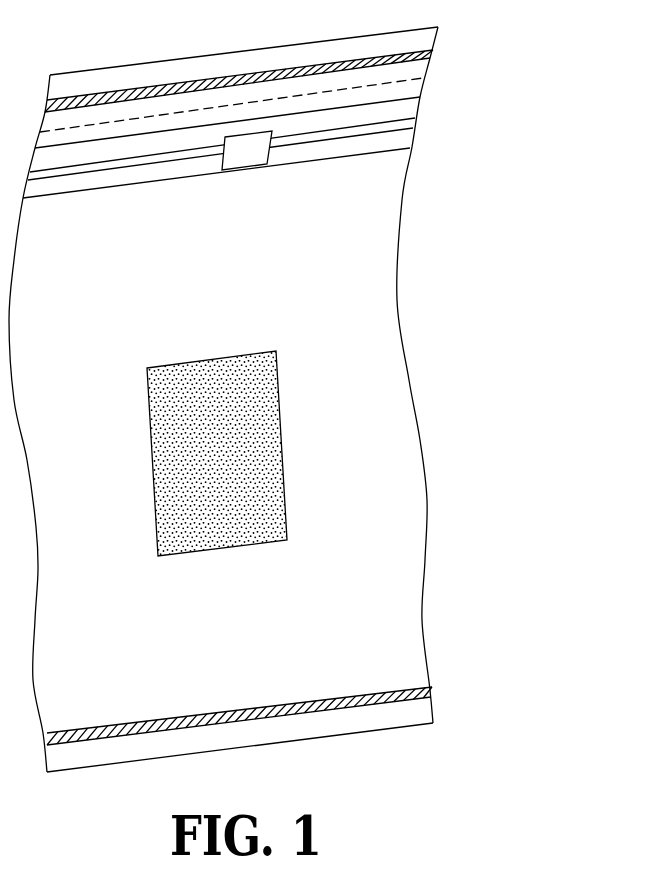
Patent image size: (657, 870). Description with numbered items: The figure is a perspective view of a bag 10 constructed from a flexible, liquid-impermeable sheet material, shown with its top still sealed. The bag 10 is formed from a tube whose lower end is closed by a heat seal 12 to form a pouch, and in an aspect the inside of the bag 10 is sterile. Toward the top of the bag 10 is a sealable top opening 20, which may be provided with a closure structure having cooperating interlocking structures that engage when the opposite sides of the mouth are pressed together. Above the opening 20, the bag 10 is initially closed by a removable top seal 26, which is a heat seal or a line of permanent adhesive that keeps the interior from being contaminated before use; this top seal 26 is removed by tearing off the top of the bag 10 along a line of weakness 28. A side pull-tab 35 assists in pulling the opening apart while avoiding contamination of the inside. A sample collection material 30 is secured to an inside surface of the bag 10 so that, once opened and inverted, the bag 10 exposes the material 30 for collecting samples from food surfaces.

The bag 10 is at (538, 308).
The heat seal 12 is at (431, 688).
The sealable top opening 20 is at (413, 120).
The removable top seal 26 is at (435, 45).
The line of weakness 28 is at (425, 73).
The sample collection material 30 is at (248, 444).
The side pull-tab 35 is at (245, 158).